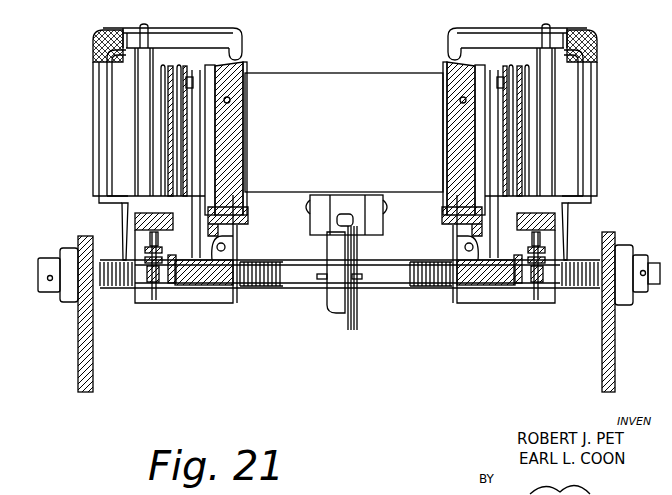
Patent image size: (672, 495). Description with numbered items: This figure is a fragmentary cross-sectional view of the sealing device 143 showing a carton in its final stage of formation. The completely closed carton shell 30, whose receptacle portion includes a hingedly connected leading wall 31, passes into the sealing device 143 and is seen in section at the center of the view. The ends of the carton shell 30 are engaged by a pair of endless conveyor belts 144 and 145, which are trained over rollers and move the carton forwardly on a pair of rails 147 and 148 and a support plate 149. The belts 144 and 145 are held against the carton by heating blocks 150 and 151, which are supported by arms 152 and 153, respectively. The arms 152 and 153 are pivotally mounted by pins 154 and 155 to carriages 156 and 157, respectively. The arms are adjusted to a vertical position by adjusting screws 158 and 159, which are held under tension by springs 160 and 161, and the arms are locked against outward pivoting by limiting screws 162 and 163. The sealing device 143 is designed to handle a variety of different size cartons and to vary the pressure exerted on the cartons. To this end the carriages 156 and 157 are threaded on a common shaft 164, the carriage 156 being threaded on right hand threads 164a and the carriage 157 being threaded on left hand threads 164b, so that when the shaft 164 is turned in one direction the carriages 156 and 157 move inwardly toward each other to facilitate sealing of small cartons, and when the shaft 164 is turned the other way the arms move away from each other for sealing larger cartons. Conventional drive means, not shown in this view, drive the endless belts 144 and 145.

The carton shell 30 is at (343, 74).
The leading wall 31 is at (357, 148).
The sealing device 143 is at (93, 40).
The endless conveyor belt 144 is at (245, 70).
The endless conveyor belt 145 is at (443, 70).
The rail 147 is at (240, 200).
The rail 148 is at (447, 203).
The support plate 149 is at (355, 192).
The heating block 150 is at (233, 130).
The heating block 151 is at (457, 126).
The arm 152 is at (188, 78).
The arm 153 is at (494, 78).
The pin 154 is at (221, 258).
The pin 155 is at (470, 256).
The carriage 156 is at (190, 305).
The carriage 157 is at (503, 305).
The adjusting screw 158 is at (150, 298).
The adjusting screw 159 is at (545, 296).
The spring 160 is at (148, 248).
The spring 161 is at (545, 242).
The limiting screw 162 is at (172, 298).
The limiting screw 163 is at (525, 298).
The shaft 164 is at (303, 285).
The right hand threads 164a is at (265, 288).
The left hand threads 164b is at (428, 290).